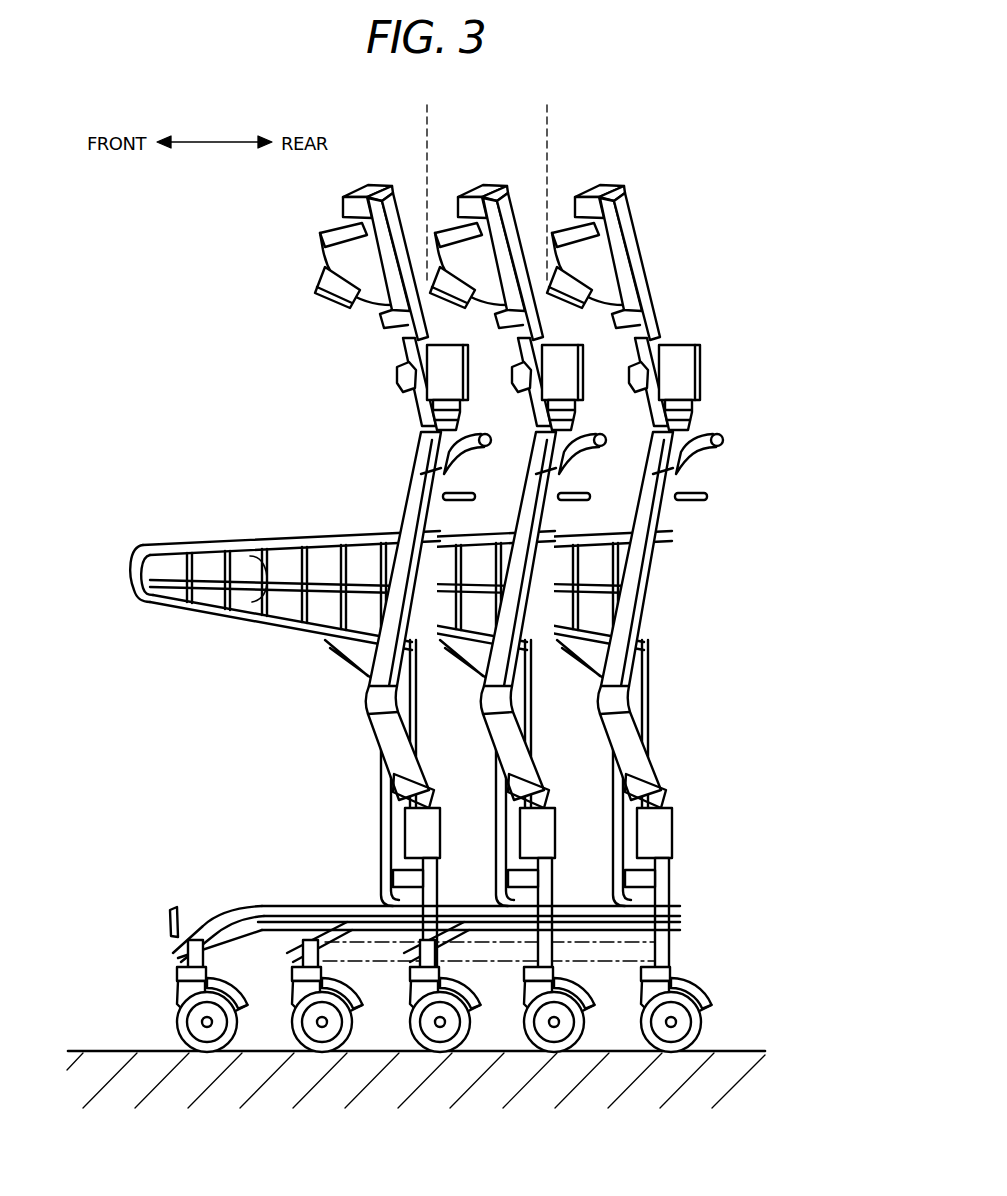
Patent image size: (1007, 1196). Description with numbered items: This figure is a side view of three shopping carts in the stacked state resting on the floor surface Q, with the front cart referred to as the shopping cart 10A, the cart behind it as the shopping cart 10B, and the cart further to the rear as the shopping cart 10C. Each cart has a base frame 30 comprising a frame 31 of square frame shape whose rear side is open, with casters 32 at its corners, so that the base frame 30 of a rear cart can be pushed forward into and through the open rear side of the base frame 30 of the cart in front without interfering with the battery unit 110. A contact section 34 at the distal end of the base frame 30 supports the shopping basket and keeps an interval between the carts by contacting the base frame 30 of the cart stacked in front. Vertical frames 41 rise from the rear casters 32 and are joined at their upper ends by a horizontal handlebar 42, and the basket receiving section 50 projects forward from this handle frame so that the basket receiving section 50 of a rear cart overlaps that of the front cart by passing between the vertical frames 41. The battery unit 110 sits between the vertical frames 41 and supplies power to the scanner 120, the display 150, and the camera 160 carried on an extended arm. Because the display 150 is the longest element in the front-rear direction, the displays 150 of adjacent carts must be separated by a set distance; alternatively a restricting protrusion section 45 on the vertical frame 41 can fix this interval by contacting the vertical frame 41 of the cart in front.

The shopping cart 10A is at (406, 484).
The shopping cart 10B is at (511, 521).
The shopping cart 10C is at (631, 521).
The base frame 30 is at (222, 905).
The frame 31 is at (288, 905).
The casters 32 is at (440, 1052).
The contact section 34 is at (171, 920).
The vertical frames 41 is at (405, 521).
The horizontal handlebar 42 is at (698, 457).
The restricting protrusion section 45 is at (510, 975).
The basket receiving section 50 is at (185, 545).
The battery unit 110 is at (410, 832).
The scanner 120 is at (445, 357).
The display 150 is at (343, 207).
The camera 160 is at (398, 386).
The floor surface Q is at (742, 1052).